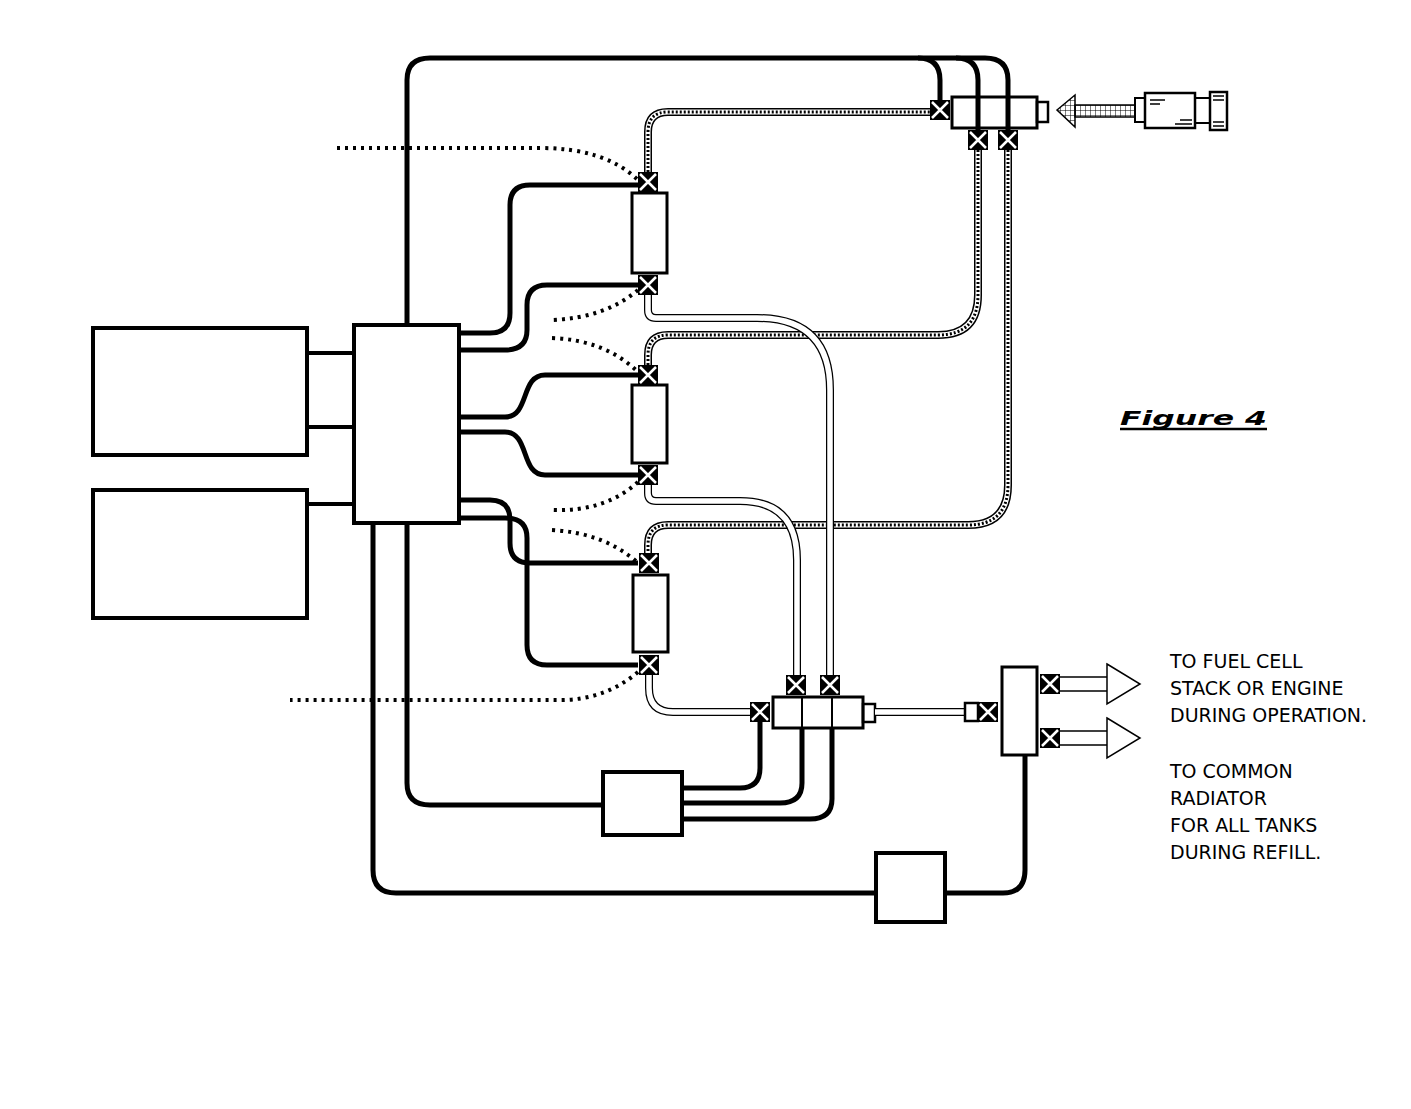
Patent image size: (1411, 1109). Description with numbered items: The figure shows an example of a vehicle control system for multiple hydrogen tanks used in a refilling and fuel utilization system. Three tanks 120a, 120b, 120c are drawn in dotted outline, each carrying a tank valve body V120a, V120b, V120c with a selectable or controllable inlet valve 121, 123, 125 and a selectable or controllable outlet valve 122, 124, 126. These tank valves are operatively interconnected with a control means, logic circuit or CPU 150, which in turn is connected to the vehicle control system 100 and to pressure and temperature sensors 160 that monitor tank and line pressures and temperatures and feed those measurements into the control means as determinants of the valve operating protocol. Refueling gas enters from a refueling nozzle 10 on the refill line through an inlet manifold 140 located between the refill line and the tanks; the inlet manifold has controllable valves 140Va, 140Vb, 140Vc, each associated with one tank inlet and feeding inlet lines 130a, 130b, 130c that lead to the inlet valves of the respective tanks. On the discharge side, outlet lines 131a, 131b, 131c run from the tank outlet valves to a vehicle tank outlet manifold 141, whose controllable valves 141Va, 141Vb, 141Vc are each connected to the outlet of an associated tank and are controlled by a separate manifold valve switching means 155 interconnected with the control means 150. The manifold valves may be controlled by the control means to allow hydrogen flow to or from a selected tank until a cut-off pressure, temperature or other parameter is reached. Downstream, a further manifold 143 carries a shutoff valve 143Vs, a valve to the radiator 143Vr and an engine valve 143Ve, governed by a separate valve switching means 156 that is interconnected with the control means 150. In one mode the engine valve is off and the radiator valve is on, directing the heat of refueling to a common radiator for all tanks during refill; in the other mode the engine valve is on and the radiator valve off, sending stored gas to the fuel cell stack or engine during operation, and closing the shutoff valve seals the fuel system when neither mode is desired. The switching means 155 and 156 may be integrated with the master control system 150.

The refueling nozzle 10 is at (1167, 128).
The vehicle control system 100 is at (200, 328).
The pressure and temperature sensors 160 is at (200, 455).
The control means 150 is at (406, 424).
The manifold valve switching means 155 is at (642, 803).
The valve switching means 156 is at (910, 887).
The tank 120a is at (487, 243).
The tank 120b is at (612, 439).
The tank 120c is at (487, 625).
The tank valve body V120a is at (667, 233).
The tank valve body V120b is at (655, 422).
The tank valve body V120c is at (648, 613).
The inlet valve 121 is at (660, 185).
The outlet valve 122 is at (660, 285).
The inlet valve 123 is at (660, 375).
The outlet valve 124 is at (660, 473).
The inlet valve 125 is at (660, 563).
The outlet valve 126 is at (660, 663).
The fill line 130a is at (747, 118).
The fill line 130b is at (974, 223).
The fill line 130c is at (1013, 325).
The discharge line 131a is at (835, 380).
The discharge line 131b is at (803, 597).
The discharge line 131c is at (652, 712).
The inlet manifold 140 is at (1028, 97).
The inlet manifold valve 140Va is at (930, 118).
The inlet manifold valve 140Vb is at (968, 147).
The inlet manifold valve 140Vc is at (1018, 150).
The outlet manifold 141 is at (840, 730).
The outlet manifold valve 141Va is at (845, 685).
The outlet manifold valve 141Vb is at (817, 674).
The outlet manifold valve 141Vc is at (750, 722).
The manifold 143 is at (1019, 667).
The engine valve 143Ve is at (1062, 673).
The shutoff valve 143Vs is at (988, 722).
The radiator valve 143Vr is at (1060, 748).